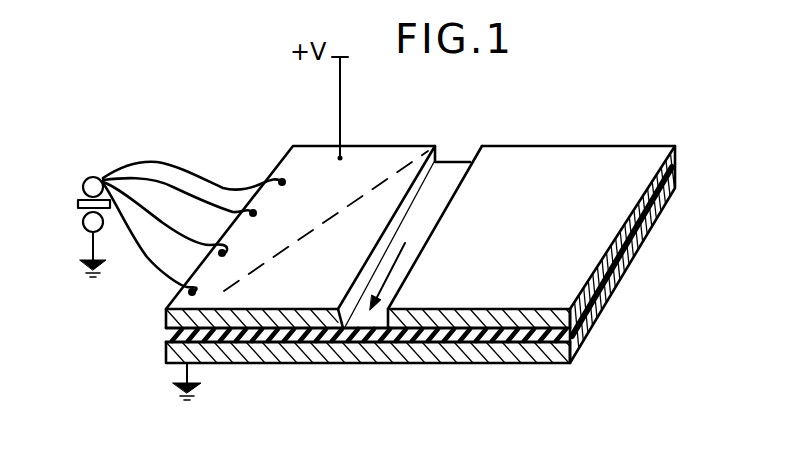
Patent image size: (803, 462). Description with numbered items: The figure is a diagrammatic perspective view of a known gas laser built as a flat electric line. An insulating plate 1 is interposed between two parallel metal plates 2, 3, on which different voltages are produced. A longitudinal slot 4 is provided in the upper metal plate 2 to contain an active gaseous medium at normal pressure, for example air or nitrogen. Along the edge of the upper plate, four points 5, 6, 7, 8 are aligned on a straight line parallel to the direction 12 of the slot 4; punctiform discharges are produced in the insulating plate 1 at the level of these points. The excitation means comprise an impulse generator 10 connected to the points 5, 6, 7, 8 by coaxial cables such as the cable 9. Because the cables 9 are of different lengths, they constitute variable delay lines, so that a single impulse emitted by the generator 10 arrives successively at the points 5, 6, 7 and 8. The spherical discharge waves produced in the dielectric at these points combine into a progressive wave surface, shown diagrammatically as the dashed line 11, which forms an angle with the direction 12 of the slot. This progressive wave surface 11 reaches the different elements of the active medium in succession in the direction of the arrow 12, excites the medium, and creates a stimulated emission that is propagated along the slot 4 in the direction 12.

The insulating plate 1 is at (530, 335).
The metal plate 2 is at (601, 164).
The metal plate 3 is at (583, 343).
The slot 4 is at (457, 171).
The point 5 is at (285, 177).
The point 6 is at (253, 209).
The point 7 is at (224, 249).
The point 8 is at (187, 285).
The coaxial cable 9 is at (140, 162).
The impulse generator 10 is at (91, 176).
The progressive wave surface 11 is at (383, 178).
The direction of the slot 12 is at (399, 262).